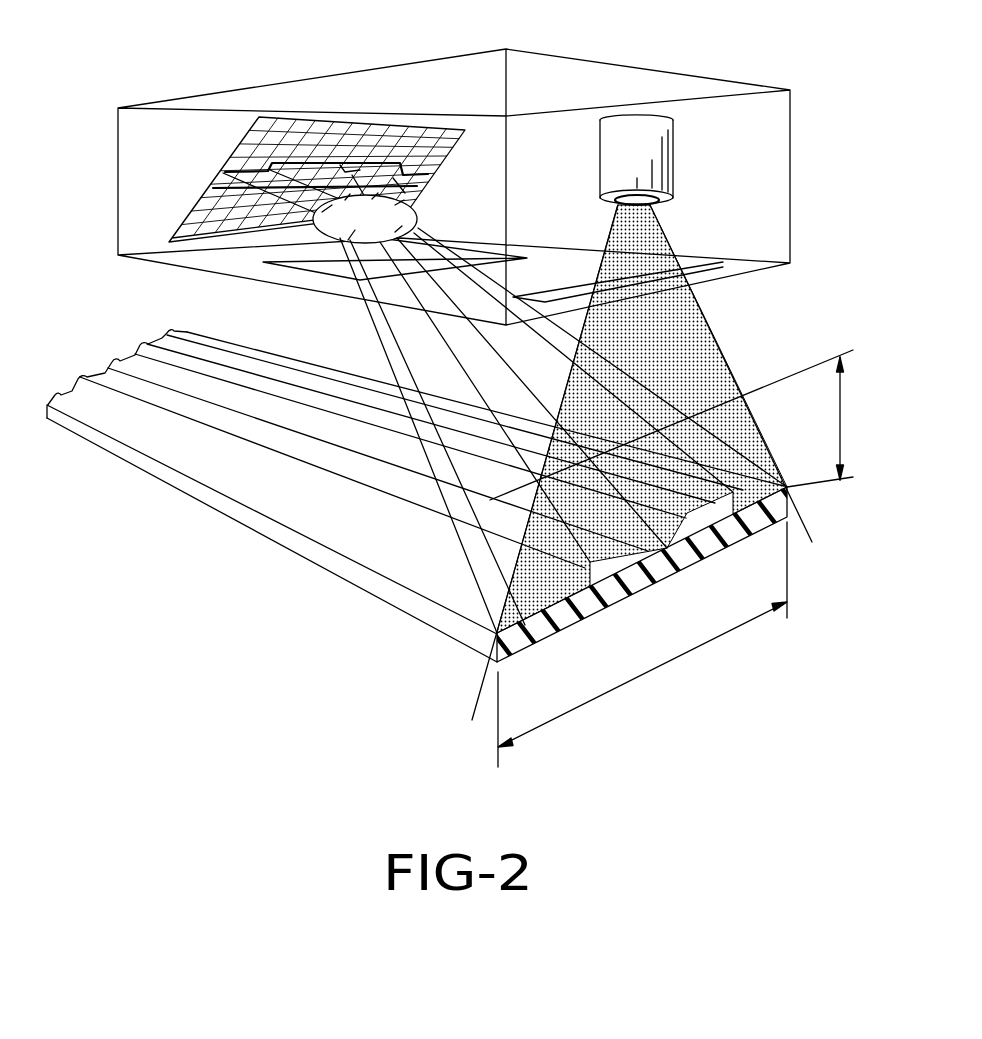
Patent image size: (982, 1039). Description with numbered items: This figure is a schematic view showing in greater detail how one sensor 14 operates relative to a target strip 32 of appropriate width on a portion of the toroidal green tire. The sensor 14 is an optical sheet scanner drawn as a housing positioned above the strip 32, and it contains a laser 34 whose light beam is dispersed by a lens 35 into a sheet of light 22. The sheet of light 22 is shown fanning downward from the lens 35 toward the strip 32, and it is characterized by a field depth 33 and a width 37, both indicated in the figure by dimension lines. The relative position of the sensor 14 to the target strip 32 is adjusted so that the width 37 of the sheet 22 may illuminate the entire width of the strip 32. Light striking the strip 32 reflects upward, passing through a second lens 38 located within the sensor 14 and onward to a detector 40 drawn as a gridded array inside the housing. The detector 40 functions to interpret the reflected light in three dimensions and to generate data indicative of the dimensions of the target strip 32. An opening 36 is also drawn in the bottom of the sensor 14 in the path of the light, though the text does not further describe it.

The sensor 14 is at (790, 143).
The sheet of light 22 is at (668, 342).
The target strip 32 is at (373, 598).
The field depth 33 is at (838, 425).
The laser 34 is at (637, 140).
The lens 35 is at (653, 201).
The window 36 is at (367, 330).
The width 37 is at (643, 675).
The lens 38 is at (347, 227).
The detector 40 is at (392, 144).